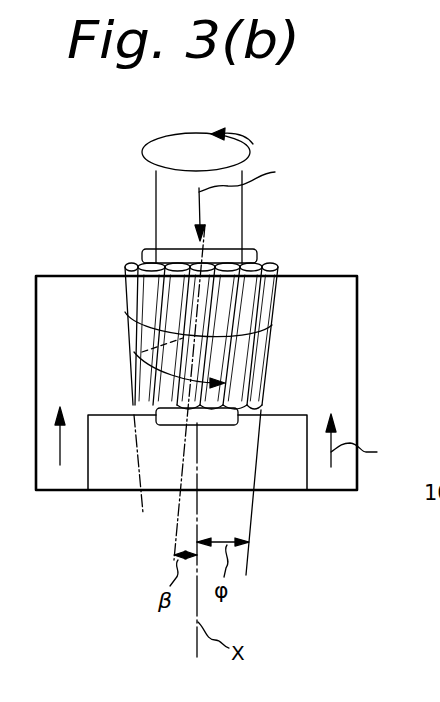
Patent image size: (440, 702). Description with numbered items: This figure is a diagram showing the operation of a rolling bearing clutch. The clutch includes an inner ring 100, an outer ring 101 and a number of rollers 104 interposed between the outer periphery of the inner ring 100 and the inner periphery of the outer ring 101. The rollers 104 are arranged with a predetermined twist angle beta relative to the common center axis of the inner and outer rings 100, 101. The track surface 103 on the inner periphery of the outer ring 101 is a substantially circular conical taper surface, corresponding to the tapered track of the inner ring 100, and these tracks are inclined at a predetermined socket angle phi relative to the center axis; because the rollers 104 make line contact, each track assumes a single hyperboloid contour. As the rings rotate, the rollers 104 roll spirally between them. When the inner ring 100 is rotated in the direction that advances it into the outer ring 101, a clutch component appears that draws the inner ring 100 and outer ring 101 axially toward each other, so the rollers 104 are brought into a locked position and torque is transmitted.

The inner ring 100 is at (233, 343).
The outer ring 101 is at (70, 293).
The track surface 103 is at (137, 328).
The rollers 104 is at (268, 281).